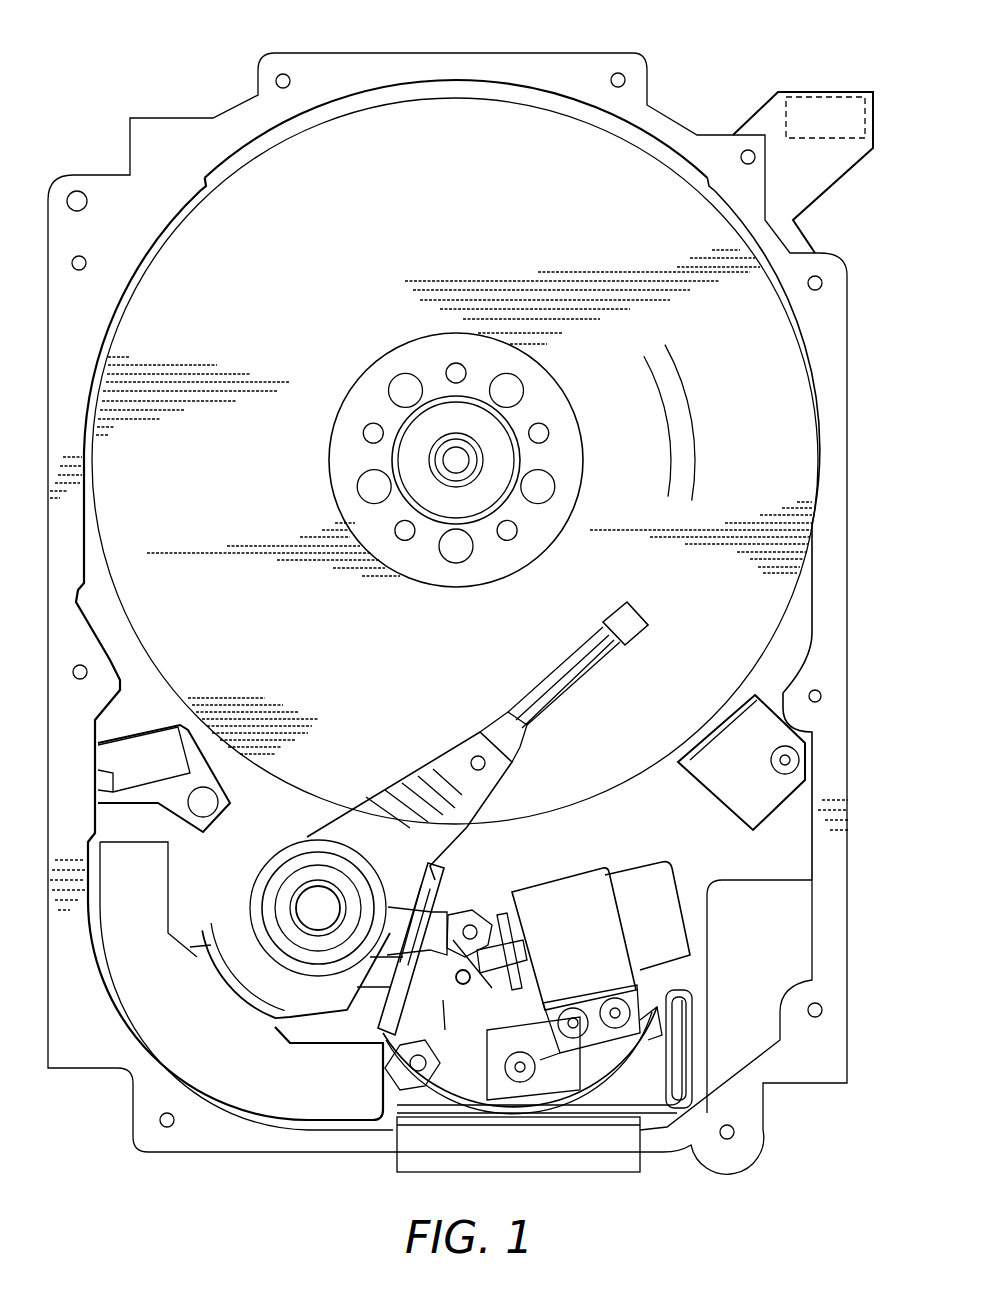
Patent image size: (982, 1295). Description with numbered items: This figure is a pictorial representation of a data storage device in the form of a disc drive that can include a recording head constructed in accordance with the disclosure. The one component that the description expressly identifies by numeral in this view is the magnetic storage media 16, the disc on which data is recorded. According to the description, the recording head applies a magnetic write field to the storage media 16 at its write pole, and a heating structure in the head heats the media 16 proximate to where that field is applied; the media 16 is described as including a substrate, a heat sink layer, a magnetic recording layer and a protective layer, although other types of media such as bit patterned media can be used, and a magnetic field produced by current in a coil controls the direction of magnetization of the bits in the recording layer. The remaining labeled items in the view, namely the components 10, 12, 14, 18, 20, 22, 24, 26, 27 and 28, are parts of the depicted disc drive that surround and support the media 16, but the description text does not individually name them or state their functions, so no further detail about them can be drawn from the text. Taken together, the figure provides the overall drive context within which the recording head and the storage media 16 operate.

The disk drive 10 is at (103, 100).
The base / housing 12 is at (598, 62).
The spindle motor hub 14 is at (448, 463).
The magnetic storage media 16 is at (362, 243).
The actuator arm 18 is at (440, 778).
The suspension 20 is at (568, 655).
The slider / head 22 is at (628, 616).
The actuator pivot 24 is at (345, 843).
The pivot bearing 26 is at (307, 898).
The data tracks 27 is at (680, 434).
The voice coil motor region 28 is at (204, 1038).